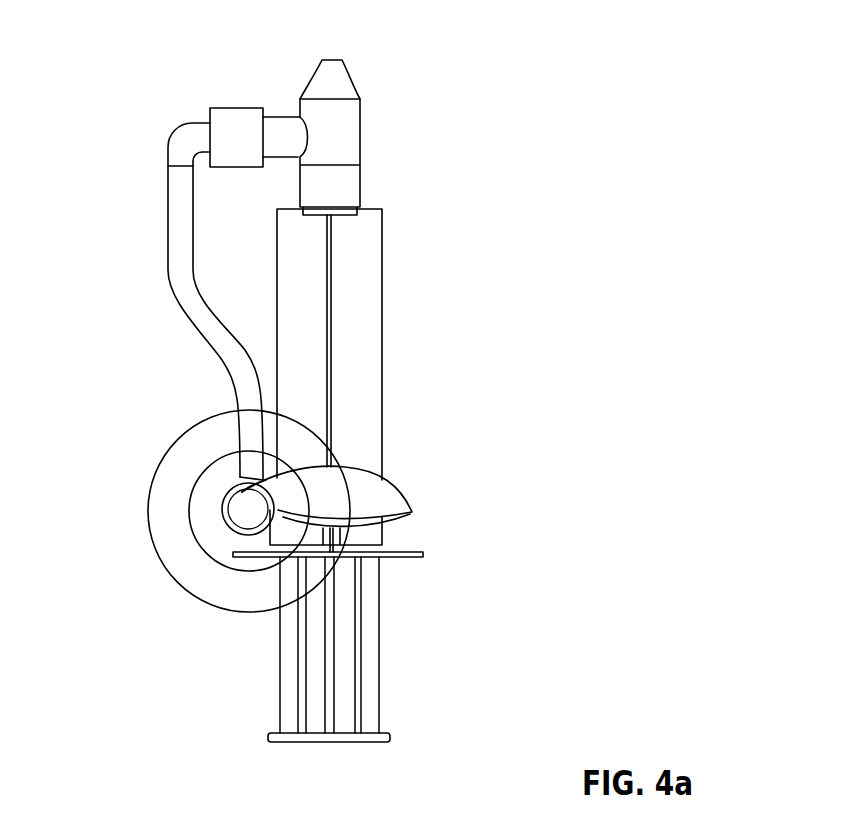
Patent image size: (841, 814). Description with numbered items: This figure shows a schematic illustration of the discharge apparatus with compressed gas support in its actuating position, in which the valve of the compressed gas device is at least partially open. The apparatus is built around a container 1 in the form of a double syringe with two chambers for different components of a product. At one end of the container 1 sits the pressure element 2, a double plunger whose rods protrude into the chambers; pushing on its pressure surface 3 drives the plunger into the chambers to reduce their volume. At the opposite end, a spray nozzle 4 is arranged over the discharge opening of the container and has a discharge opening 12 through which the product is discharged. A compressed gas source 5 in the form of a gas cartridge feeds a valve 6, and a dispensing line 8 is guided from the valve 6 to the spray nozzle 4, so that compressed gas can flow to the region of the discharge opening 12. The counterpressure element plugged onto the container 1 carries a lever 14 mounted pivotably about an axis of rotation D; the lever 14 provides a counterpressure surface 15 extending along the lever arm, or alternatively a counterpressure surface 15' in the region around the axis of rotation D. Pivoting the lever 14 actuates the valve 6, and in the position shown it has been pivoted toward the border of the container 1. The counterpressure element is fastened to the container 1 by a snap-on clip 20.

The container 1 is at (373, 303).
The pressure element 2 is at (368, 677).
The pressure surface 3 is at (393, 740).
The spray nozzle 4 is at (353, 142).
The compressed gas source 5 is at (178, 463).
The valve 6 is at (238, 508).
The dispensing line 8 is at (180, 241).
The discharge opening 12 is at (328, 56).
The lever 14 is at (412, 512).
The counterpressure surface 15 is at (379, 458).
The counterpressure surface 15' is at (168, 415).
The snap-on clip 20 is at (372, 532).
The axis of rotation D is at (253, 510).